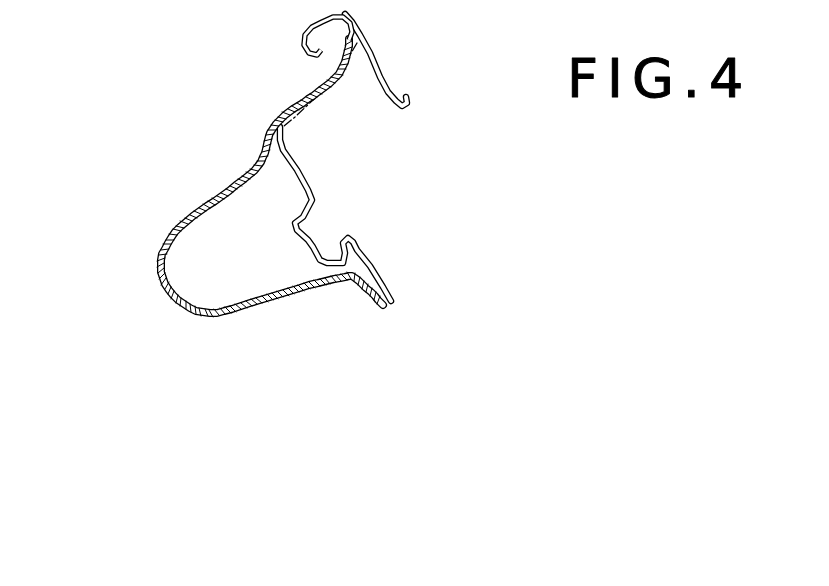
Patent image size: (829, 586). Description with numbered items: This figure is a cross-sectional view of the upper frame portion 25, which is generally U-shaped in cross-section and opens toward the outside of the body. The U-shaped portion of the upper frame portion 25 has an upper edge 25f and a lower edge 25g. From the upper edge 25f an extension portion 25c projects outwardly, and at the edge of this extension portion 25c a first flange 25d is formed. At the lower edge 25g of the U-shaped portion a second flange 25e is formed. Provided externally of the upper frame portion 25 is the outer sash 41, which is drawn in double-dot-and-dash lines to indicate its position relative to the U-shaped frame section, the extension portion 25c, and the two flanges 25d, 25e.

The upper frame portion 25 is at (209, 212).
The extension portion 25c is at (296, 100).
The first flange 25d is at (344, 48).
The second flange 25e is at (371, 302).
The upper edge 25f is at (263, 143).
The lower edge 25g is at (342, 284).
The outer sash 41 is at (313, 204).